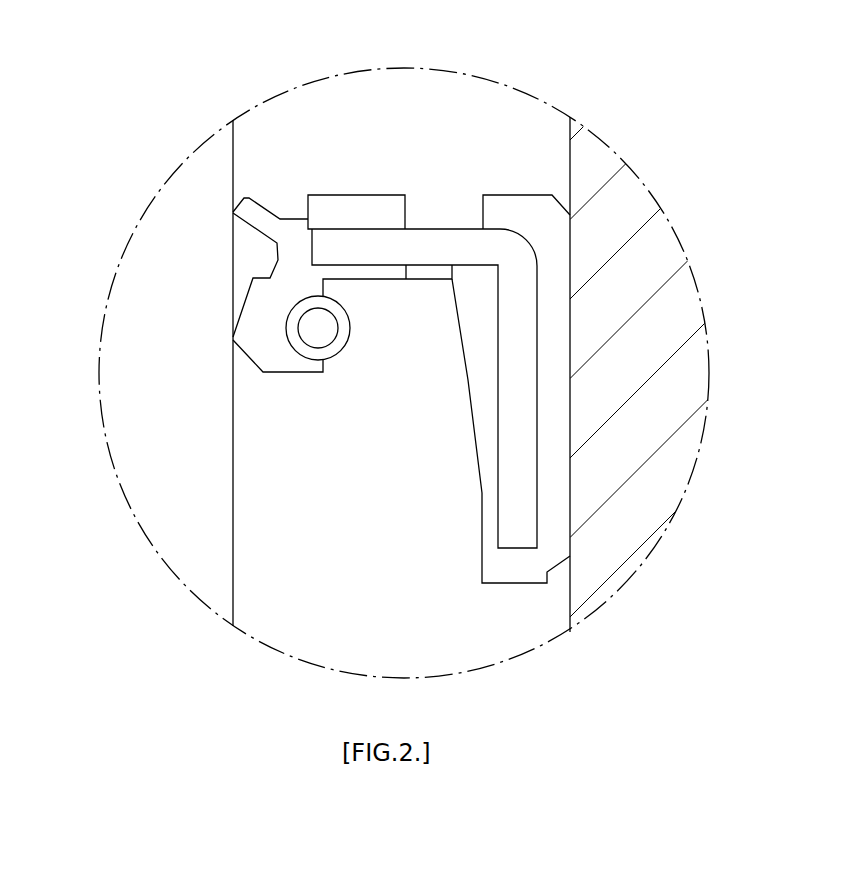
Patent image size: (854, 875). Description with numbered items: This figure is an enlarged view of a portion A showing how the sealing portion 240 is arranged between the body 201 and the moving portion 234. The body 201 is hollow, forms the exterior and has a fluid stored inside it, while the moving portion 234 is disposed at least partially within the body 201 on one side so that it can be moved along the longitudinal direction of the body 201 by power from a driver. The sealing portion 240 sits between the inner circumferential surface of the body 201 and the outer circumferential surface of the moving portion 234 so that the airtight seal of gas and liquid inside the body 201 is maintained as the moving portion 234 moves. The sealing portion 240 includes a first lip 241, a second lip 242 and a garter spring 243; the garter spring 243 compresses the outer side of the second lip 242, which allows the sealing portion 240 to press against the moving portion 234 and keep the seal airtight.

The portion A is at (482, 78).
The body 201 is at (608, 205).
The moving portion 234 is at (180, 220).
The sealing portion 240 is at (383, 471).
The first lip 241 is at (251, 210).
The second lip 242 is at (248, 353).
The garter spring 243 is at (322, 328).